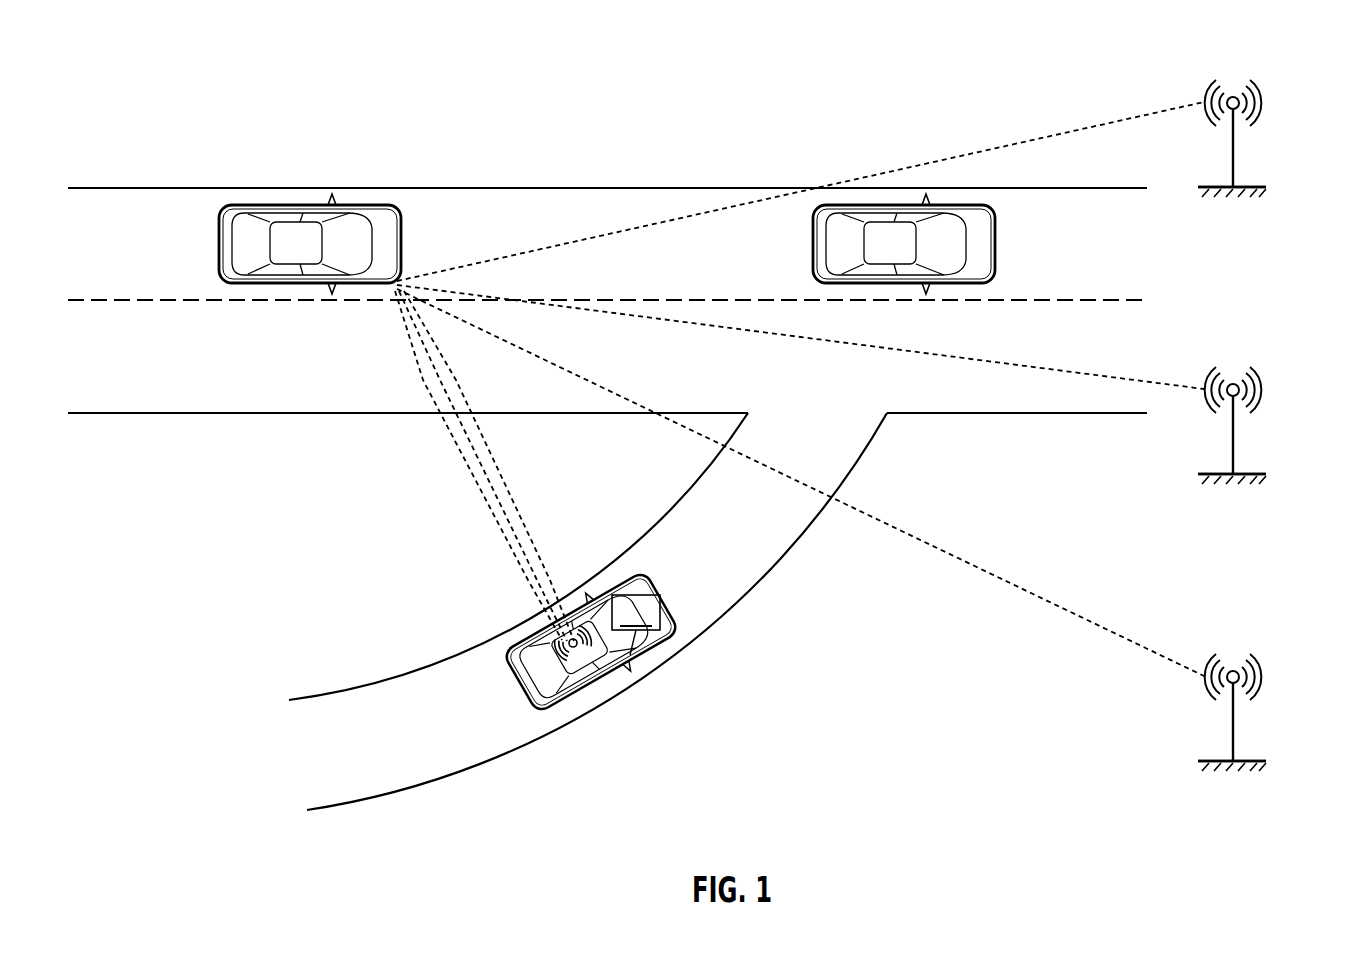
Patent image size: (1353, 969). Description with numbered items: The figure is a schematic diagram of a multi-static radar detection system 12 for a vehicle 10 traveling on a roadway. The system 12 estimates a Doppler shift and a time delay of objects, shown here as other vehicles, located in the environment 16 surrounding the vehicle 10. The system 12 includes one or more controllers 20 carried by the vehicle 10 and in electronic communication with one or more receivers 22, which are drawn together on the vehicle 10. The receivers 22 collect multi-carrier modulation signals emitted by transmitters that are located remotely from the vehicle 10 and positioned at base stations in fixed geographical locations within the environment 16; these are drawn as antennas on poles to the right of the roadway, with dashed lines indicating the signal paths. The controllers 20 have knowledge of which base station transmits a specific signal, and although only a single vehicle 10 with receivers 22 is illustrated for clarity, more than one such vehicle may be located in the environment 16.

The vehicle 10 is at (655, 576).
The multi-static radar detection system 12 is at (677, 660).
The environment 16 is at (380, 76).
The controller 20 is at (636, 625).
The receiver 22 is at (560, 635).